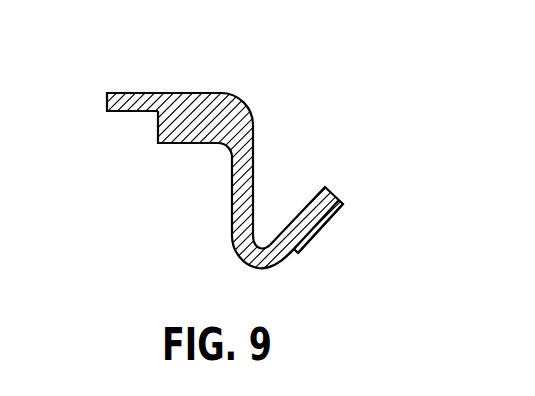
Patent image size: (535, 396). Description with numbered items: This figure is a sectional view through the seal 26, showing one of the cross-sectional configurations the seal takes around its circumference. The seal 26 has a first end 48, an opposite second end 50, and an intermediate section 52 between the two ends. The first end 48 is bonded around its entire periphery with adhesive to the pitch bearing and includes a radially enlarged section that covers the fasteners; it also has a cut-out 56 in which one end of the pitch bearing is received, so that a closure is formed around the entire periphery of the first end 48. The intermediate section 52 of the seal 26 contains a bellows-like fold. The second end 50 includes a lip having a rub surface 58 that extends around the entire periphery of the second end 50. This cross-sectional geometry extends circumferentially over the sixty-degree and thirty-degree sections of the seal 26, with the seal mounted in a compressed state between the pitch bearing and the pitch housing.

The seal 26 is at (317, 101).
The first end 48 is at (143, 100).
The second end 50 is at (333, 193).
The intermediate section 52 is at (240, 260).
The cut-out 56 is at (112, 144).
The rub surface 58 is at (340, 237).